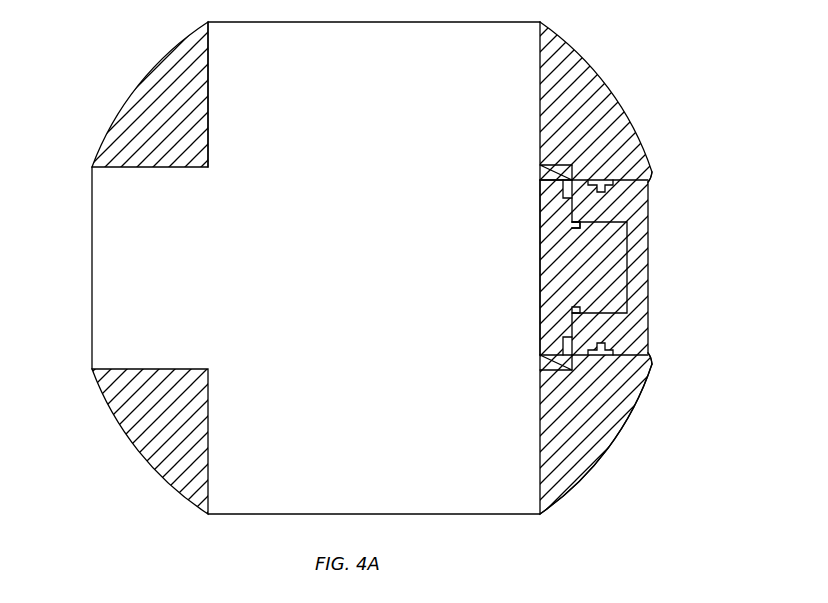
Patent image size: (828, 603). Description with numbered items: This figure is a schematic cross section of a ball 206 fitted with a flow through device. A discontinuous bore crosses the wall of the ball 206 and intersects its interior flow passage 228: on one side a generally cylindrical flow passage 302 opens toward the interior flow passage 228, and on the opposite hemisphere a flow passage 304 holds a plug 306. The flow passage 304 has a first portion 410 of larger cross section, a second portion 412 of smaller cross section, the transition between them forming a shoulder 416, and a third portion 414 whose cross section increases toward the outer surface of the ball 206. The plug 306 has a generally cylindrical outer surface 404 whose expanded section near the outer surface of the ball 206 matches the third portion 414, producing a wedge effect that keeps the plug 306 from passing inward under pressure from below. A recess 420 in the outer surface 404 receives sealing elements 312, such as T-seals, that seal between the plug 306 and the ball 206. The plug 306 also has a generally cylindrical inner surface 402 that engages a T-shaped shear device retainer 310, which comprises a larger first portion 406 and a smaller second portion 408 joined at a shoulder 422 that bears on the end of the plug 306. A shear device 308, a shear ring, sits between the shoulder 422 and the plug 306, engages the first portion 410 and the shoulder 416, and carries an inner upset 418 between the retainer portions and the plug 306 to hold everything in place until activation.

The ball 206 is at (150, 463).
The interior flow passage 228 is at (275, 506).
The flow passage 302 is at (98, 188).
The flow passage 304 is at (600, 357).
The plug 306 is at (650, 220).
The shear device 308 is at (565, 372).
The shear device retainer 310 is at (555, 348).
The sealing elements 312 is at (600, 180).
The inner surface 402 is at (627, 296).
The outer surface 404 is at (648, 346).
The first portion 406 is at (555, 180).
The second portion 408 is at (560, 290).
The first portion 410 is at (556, 166).
The second portion 412 is at (590, 178).
The third portion 414 is at (650, 168).
The shoulder 416 is at (576, 372).
The inner upset 418 is at (565, 338).
The recess 420 is at (580, 224).
The shoulder 422 is at (566, 200).